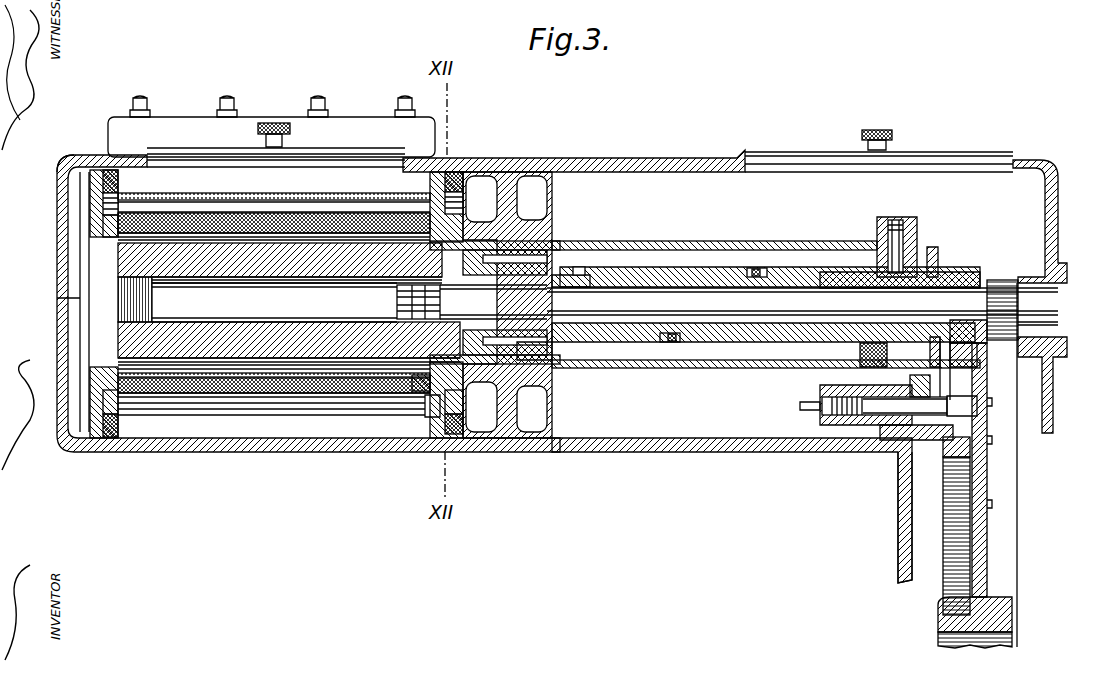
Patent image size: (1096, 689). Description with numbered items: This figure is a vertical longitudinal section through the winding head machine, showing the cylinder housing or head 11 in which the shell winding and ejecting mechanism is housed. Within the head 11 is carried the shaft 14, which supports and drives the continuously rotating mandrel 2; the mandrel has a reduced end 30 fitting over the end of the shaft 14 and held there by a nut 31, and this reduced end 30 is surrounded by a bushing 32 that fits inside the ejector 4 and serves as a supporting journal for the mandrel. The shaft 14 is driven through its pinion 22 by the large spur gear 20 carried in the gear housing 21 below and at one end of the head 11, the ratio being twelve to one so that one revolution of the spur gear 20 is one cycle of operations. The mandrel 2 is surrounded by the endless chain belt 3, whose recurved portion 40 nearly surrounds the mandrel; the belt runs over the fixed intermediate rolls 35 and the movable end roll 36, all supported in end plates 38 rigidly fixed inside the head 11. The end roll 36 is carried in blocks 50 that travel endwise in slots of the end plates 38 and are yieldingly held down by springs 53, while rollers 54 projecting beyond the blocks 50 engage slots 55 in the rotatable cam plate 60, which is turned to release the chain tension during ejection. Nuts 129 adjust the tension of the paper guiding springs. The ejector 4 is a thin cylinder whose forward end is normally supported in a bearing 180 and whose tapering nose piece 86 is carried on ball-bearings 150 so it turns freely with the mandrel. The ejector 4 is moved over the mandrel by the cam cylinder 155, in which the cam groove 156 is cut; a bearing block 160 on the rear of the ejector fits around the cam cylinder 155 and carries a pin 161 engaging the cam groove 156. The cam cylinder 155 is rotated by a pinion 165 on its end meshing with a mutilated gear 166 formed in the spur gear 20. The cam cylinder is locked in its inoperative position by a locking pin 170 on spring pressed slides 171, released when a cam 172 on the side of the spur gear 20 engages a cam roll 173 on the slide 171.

The mandrel 2 is at (200, 348).
The endless chain belt 3 is at (212, 455).
The ejector 4 is at (655, 243).
The cylinder housing 11 is at (98, 160).
The shaft 14 is at (722, 316).
The spur gear 20 is at (1020, 363).
The gear housing 21 is at (898, 540).
The pinion 22 is at (1008, 280).
The reduced end 30 is at (553, 345).
The nut 31 is at (397, 300).
The bushing 32 is at (527, 350).
The intermediate rolls 35 is at (360, 408).
The end roll 36 is at (306, 210).
The end plates 38 is at (90, 180).
The recurved portion 40 is at (243, 232).
The blocks 50 is at (128, 200).
The springs 53 is at (72, 173).
The rollers 54 is at (100, 208).
The slots 55 is at (103, 196).
The cam plate 60 is at (92, 228).
The nose piece 86 is at (417, 383).
The nuts 129 is at (218, 116).
The ball-bearings 150 is at (447, 360).
The cam cylinder 155 is at (716, 268).
The cam groove 156 is at (762, 267).
The bearing block 160 is at (918, 248).
The pin 161 is at (905, 236).
The pinion 165 is at (963, 282).
The mutilated gear 166 is at (963, 332).
The locking pin 170 is at (932, 372).
The spring pressed slide 171 is at (875, 408).
The cam 172 is at (990, 425).
The cam roll 173 is at (957, 410).
The bearing 180 is at (540, 240).